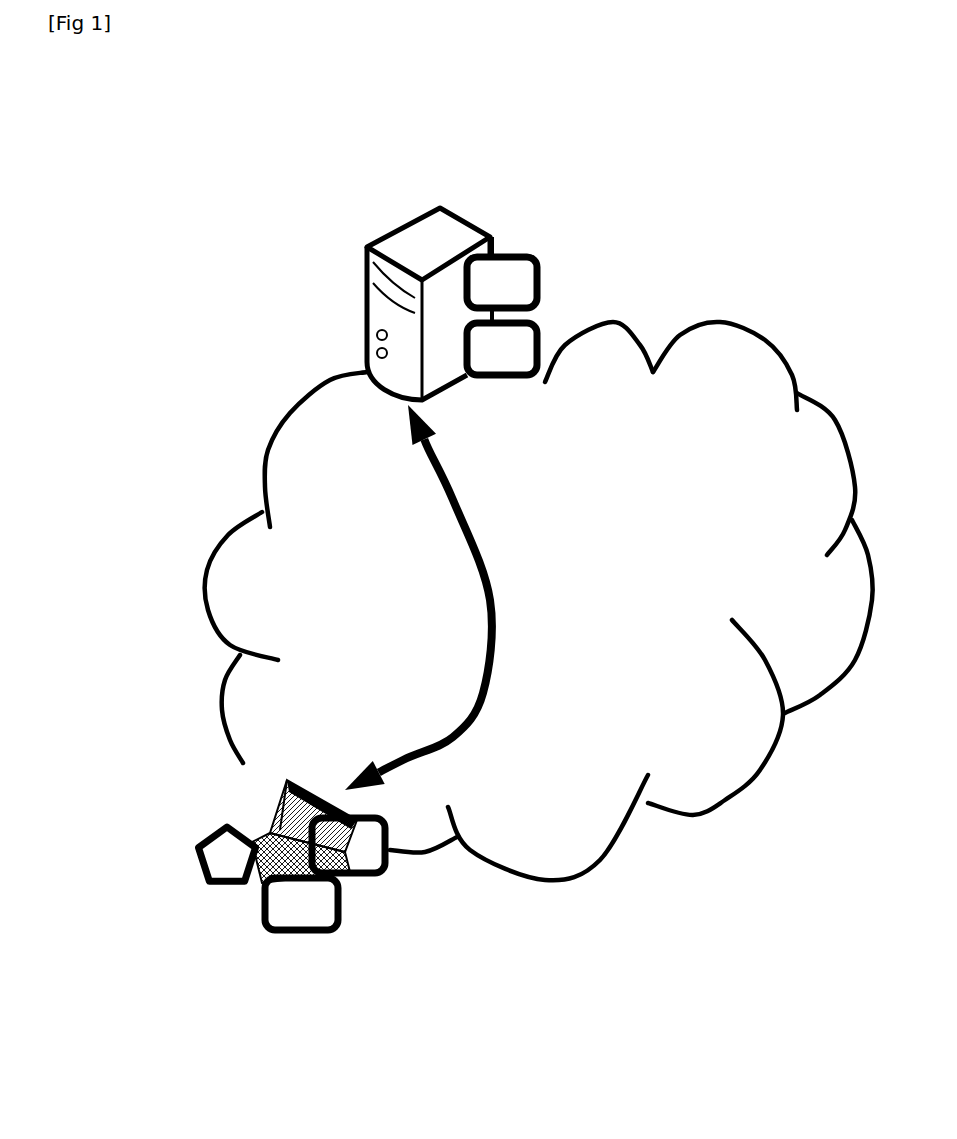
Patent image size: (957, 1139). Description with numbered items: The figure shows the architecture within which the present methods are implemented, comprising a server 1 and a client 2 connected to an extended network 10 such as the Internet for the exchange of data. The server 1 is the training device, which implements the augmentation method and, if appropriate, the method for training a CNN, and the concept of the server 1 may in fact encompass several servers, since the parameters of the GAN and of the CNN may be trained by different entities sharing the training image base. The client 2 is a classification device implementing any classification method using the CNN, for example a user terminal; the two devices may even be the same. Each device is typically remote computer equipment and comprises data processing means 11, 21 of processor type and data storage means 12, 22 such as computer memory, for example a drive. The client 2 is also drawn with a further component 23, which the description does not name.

The server 1 is at (529, 280).
The extended network 10 is at (267, 389).
The data processing means 11 is at (552, 365).
The data storage means 12 is at (554, 268).
The client 2 is at (301, 897).
The data processing means 21 is at (402, 889).
The data storage means 22 is at (346, 938).
The terminal input unit 23 is at (189, 890).